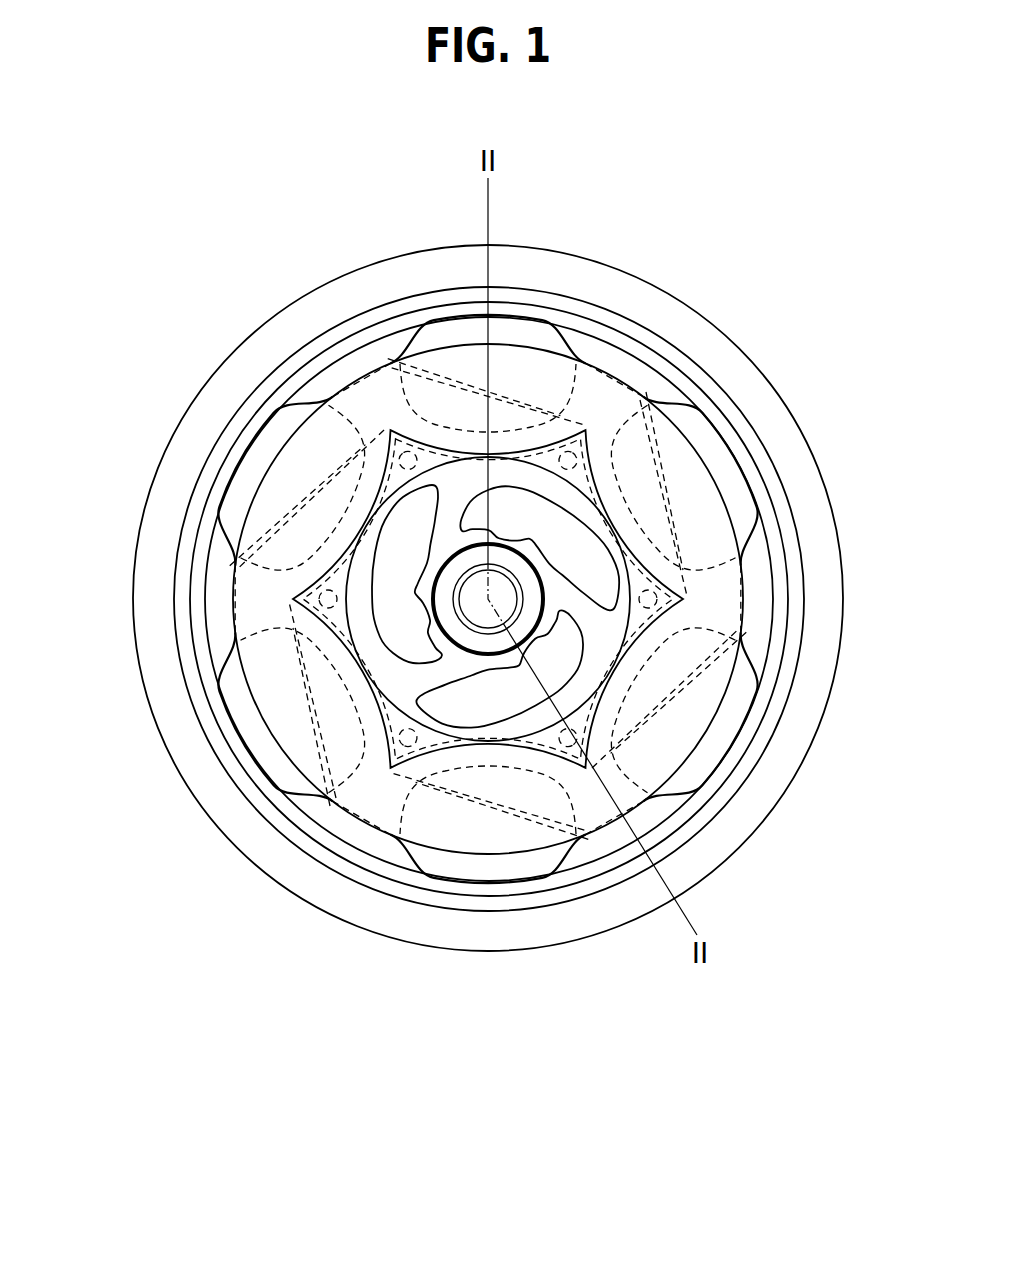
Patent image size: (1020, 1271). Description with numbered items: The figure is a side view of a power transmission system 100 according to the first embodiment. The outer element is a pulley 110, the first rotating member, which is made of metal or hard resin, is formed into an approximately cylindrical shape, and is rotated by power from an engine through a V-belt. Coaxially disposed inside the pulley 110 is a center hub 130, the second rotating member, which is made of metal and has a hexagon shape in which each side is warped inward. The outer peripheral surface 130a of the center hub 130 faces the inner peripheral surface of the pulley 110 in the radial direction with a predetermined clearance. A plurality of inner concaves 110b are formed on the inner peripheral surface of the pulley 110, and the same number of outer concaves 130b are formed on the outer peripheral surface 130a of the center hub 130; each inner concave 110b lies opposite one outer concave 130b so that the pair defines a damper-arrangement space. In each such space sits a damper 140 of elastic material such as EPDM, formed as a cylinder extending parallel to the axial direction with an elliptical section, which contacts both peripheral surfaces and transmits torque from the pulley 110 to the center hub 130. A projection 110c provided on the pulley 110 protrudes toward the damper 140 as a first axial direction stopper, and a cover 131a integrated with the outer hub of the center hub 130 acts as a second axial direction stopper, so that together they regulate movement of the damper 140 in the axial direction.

The power transmission system 100 is at (644, 276).
The pulley 110 is at (686, 296).
The inner concave 110b is at (503, 335).
The projection 110c is at (584, 372).
The center hub 130 is at (512, 723).
The outer peripheral surface 130a is at (530, 760).
The outer concave 130b is at (462, 420).
The cover 131a is at (375, 805).
The damper 140 is at (479, 330).